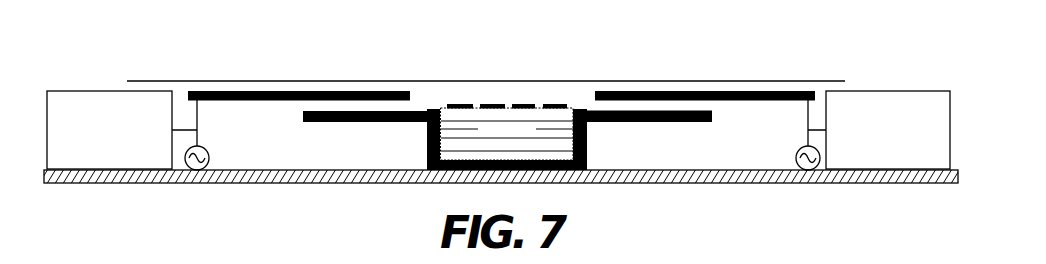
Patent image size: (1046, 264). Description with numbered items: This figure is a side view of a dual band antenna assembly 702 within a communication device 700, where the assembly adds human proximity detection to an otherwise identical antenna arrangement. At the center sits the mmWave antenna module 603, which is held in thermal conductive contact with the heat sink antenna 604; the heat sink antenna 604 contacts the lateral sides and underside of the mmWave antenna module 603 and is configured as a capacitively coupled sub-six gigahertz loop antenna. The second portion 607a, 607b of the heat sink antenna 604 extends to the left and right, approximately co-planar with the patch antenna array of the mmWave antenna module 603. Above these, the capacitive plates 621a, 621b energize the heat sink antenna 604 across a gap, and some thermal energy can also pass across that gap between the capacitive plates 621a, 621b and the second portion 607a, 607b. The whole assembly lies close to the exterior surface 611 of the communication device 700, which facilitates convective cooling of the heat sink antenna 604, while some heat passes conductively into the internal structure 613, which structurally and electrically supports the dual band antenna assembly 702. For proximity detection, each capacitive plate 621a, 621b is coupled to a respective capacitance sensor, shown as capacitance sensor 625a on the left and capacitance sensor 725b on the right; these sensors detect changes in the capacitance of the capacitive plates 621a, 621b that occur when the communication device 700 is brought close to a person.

The communication device 700 is at (190, 77).
The exterior surface 611 is at (272, 80).
The capacitive plate 621a is at (360, 90).
The capacitive plate 621b is at (698, 90).
The second portion of heat sink antenna 607a is at (368, 122).
The second portion of heat sink antenna 607b is at (613, 122).
The heat sink antenna 604 is at (650, 122).
The mmWave antenna module 603 is at (489, 140).
The internal structure 613 is at (310, 184).
The dual band antenna assembly 702 is at (268, 143).
The capacitance sensor 625a is at (87, 162).
The capacitance sensor 725b is at (865, 162).